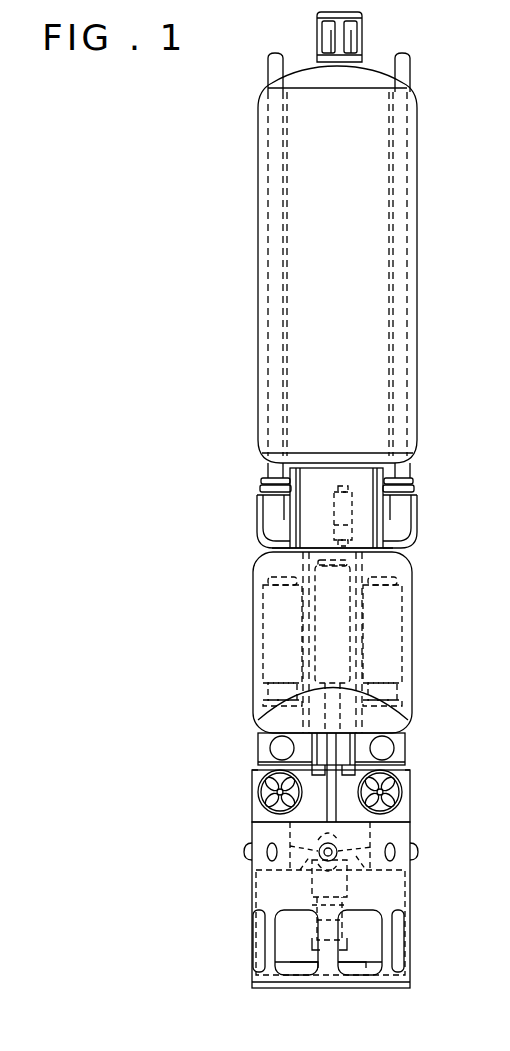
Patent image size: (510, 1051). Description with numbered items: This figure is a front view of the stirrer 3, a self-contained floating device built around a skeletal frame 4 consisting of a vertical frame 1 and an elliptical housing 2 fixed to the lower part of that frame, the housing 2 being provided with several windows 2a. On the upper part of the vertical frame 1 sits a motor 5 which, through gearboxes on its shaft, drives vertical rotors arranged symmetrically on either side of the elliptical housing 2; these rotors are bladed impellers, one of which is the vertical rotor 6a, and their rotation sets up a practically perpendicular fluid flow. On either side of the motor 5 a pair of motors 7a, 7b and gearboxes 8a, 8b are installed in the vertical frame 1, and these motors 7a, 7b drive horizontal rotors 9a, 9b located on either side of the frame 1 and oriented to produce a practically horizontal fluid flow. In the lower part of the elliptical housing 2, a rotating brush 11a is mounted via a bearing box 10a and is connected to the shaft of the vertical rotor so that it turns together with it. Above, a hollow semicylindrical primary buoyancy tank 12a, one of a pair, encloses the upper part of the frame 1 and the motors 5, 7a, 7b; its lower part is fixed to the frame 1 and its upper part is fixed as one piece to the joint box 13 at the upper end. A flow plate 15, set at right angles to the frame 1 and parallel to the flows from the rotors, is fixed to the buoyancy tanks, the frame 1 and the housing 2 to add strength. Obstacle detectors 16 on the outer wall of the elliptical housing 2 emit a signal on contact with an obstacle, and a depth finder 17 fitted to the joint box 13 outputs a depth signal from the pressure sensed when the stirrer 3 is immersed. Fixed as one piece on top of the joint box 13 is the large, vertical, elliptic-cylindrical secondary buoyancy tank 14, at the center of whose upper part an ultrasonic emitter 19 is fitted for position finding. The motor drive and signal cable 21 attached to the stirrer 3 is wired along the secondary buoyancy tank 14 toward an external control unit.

The vertical frame 1 is at (405, 773).
The elliptical housing 2 is at (408, 890).
The windows 2a is at (378, 962).
The stirrer 3 is at (425, 577).
The frame 4 is at (252, 812).
The motor 5 is at (350, 648).
The vertical rotor 6a is at (320, 856).
The motor 7a is at (262, 640).
The motor 7b is at (403, 657).
The gearbox 8a is at (270, 746).
The gearbox 8b is at (395, 740).
The horizontal rotor 9a is at (262, 790).
The horizontal rotor 9b is at (400, 795).
The bearing box 10a is at (312, 926).
The rotating brush 11a is at (300, 962).
The primary buoyancy tank 12a is at (252, 573).
The joint box 13 is at (303, 490).
The secondary buoyancy tank 14 is at (295, 236).
The flow plate 15 is at (326, 800).
The obstacle detectors 16 is at (246, 851).
The depth finder 17 is at (388, 505).
The ultrasonic emitter 19 is at (343, 48).
The motor drive and signal cable 21 is at (270, 150).